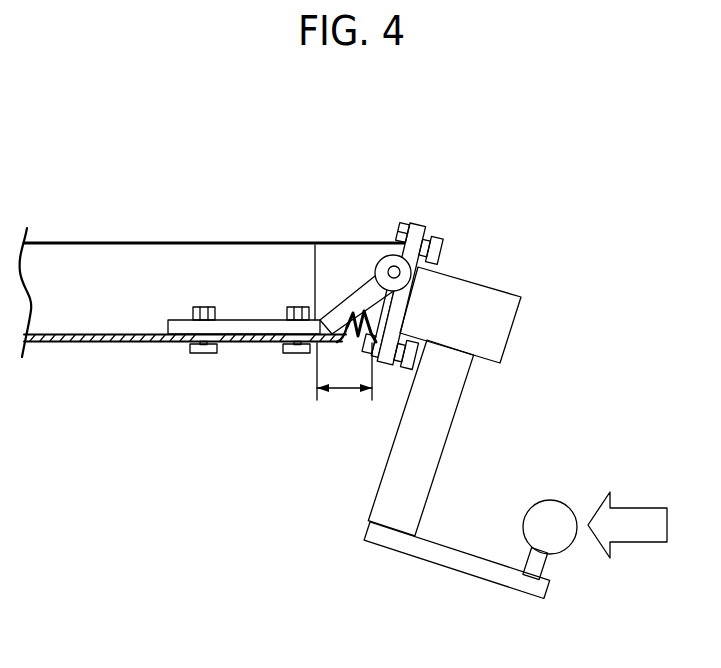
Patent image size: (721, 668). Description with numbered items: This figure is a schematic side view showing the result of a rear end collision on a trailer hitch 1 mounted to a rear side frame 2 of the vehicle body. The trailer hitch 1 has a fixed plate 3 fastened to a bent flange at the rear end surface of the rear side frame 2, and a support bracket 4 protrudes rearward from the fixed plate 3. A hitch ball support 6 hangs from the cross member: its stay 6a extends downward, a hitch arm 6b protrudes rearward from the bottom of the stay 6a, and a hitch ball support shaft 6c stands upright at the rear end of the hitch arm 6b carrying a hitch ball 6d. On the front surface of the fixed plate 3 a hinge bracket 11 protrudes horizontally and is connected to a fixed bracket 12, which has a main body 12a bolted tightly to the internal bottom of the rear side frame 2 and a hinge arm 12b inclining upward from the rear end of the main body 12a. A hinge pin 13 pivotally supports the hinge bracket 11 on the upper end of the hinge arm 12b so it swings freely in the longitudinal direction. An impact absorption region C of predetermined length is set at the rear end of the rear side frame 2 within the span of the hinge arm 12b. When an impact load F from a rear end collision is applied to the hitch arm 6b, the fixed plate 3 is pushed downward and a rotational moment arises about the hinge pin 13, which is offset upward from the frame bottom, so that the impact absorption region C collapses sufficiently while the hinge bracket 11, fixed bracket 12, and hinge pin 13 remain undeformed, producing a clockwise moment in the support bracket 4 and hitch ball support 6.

The trailer hitch 1 is at (500, 215).
The rear side frame 2 is at (119, 243).
The fixed plate 3 is at (418, 229).
The support bracket 4 is at (503, 325).
The hitch ball support 6 is at (397, 577).
The stay 6a is at (438, 436).
The hitch arm 6b is at (491, 588).
The hitch ball support shaft 6c is at (548, 565).
The hitch ball 6d is at (523, 521).
The hinge bracket 11 is at (383, 260).
The fixed bracket 12 is at (308, 154).
The main body 12a is at (252, 320).
The hinge arm 12b is at (338, 302).
The hinge pin 13 is at (391, 264).
The impact absorption region C is at (344, 371).
The impact load F is at (649, 525).